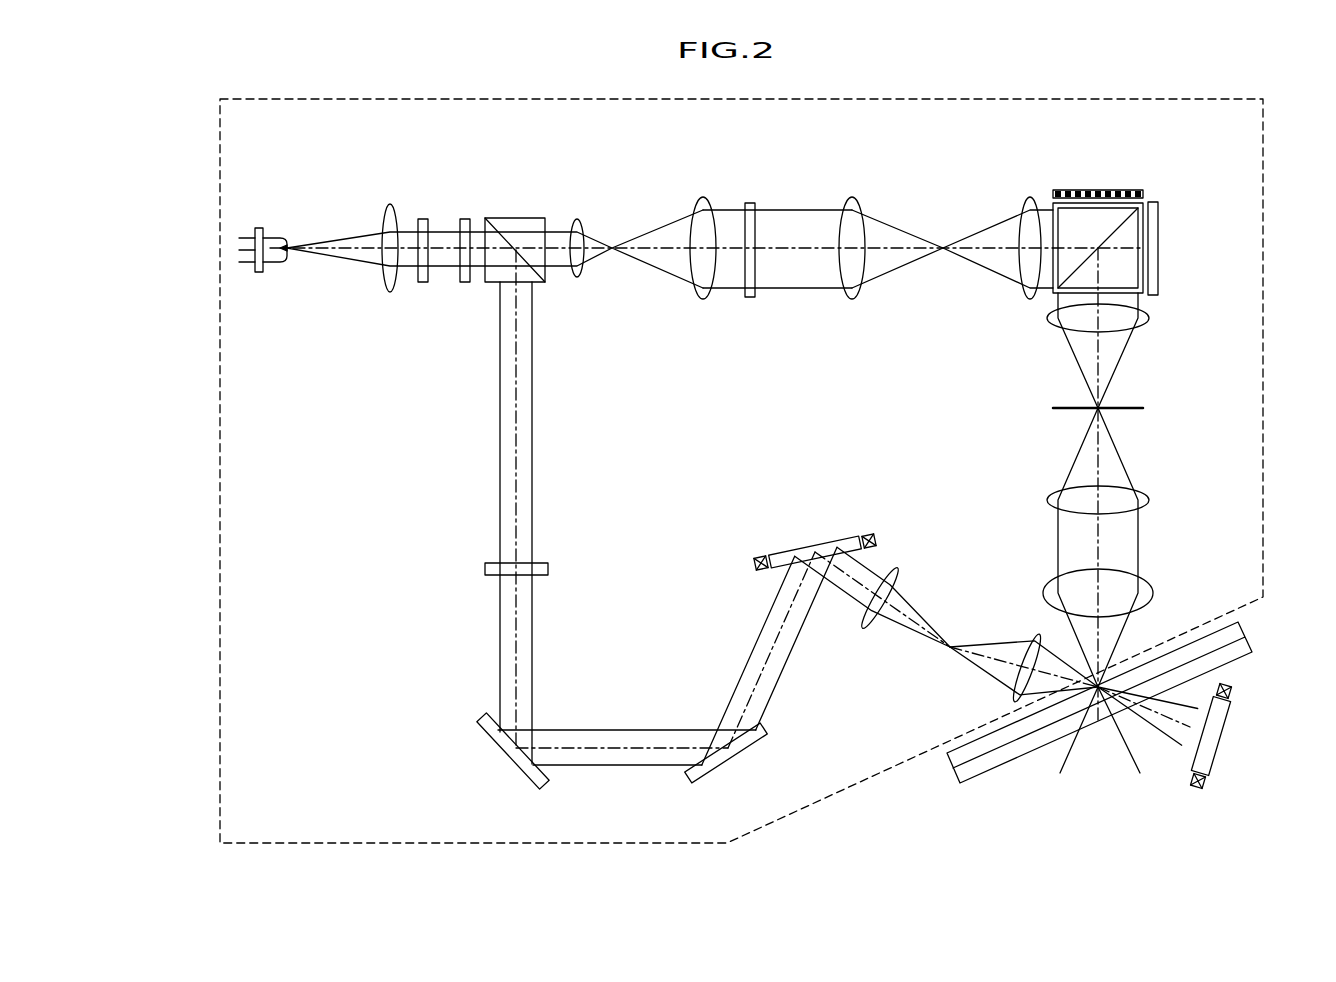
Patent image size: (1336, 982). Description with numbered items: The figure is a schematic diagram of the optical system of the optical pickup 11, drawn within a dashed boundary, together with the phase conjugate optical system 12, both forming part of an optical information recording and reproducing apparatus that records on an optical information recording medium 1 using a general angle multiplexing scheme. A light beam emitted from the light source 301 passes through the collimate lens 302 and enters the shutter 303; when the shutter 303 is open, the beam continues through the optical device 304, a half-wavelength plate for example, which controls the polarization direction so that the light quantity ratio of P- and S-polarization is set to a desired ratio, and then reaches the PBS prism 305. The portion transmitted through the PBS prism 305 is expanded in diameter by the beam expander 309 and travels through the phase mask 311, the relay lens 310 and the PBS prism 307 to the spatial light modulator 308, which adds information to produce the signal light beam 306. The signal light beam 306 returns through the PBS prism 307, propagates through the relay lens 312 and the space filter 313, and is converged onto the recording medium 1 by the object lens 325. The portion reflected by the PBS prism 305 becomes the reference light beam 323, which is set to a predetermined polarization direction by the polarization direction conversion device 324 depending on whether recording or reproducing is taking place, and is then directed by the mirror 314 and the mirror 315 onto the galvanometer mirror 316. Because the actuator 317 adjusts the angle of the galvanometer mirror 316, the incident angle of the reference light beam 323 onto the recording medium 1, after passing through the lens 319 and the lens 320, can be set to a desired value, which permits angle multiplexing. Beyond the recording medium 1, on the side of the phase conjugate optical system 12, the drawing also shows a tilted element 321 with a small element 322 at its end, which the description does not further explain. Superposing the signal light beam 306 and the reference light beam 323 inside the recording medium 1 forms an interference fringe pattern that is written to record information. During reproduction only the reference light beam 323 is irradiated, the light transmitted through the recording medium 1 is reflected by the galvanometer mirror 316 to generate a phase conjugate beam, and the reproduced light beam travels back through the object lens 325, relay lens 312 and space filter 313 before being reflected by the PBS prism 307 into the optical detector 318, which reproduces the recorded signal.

The optical information recording medium 1 is at (970, 785).
The optical pickup 11 is at (218, 818).
The phase conjugate optical system 12 is at (1281, 778).
The light source 301 is at (268, 236).
The collimate lens 302 is at (387, 213).
The shutter 303 is at (420, 218).
The optical device 304 is at (468, 218).
The PBS prism 305 is at (522, 215).
The signal light beam 306 is at (791, 228).
The PBS prism 307 is at (1068, 228).
The spatial light modulator 308 is at (1110, 194).
The beam expander 309 is at (698, 189).
The relay lens 310 is at (1015, 189).
The phase mask 311 is at (752, 300).
The relay lens 312 is at (1038, 325).
The space filter 313 is at (1145, 408).
The mirror 314 is at (500, 752).
The mirror 315 is at (708, 777).
The galvanometer mirror 316 is at (805, 545).
The actuator 317 is at (752, 553).
The optical detector 318 is at (1160, 258).
The lens 319 is at (868, 638).
The lens 320 is at (1025, 638).
The detector 321 is at (1218, 740).
The detector actuator 322 is at (1195, 790).
The reference light beam 323 is at (608, 740).
The polarization direction conversion device 324 is at (485, 569).
The object lens 325 is at (1150, 600).